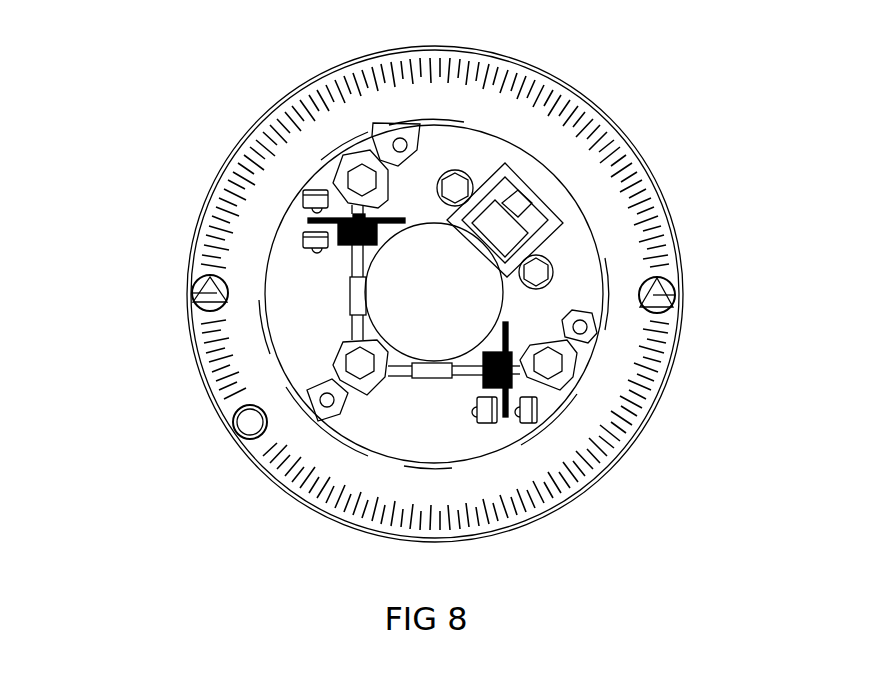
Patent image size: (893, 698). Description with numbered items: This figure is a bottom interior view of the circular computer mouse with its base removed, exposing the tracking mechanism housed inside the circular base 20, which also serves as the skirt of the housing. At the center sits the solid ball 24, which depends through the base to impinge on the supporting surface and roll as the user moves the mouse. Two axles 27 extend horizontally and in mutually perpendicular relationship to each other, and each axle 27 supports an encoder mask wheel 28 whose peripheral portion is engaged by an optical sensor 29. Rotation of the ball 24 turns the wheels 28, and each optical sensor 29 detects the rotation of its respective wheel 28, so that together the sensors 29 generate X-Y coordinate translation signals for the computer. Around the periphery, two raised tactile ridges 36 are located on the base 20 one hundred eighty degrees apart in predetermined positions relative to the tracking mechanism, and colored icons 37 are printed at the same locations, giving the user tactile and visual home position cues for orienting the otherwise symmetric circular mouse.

The circular base 20 is at (573, 158).
The solid ball 24 is at (435, 223).
The axles 27 is at (345, 300).
The encoder mask wheel 28 is at (386, 218).
The optical sensor 29 is at (318, 236).
The raised tactile ridges 36 is at (187, 270).
The colored icons 37 is at (673, 262).